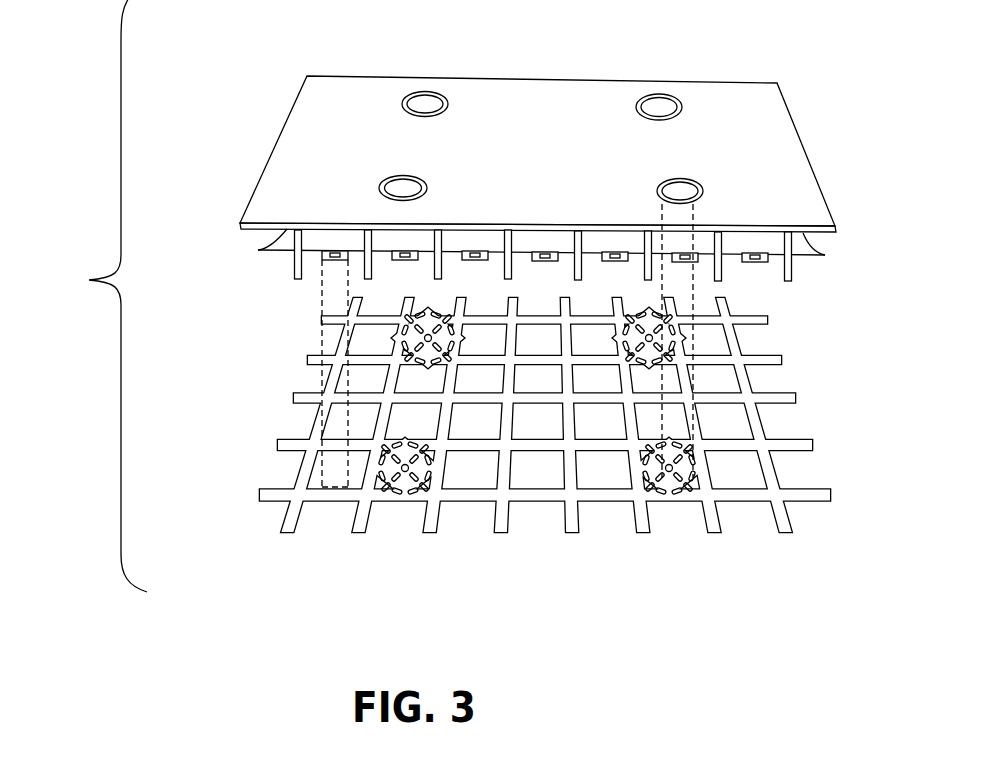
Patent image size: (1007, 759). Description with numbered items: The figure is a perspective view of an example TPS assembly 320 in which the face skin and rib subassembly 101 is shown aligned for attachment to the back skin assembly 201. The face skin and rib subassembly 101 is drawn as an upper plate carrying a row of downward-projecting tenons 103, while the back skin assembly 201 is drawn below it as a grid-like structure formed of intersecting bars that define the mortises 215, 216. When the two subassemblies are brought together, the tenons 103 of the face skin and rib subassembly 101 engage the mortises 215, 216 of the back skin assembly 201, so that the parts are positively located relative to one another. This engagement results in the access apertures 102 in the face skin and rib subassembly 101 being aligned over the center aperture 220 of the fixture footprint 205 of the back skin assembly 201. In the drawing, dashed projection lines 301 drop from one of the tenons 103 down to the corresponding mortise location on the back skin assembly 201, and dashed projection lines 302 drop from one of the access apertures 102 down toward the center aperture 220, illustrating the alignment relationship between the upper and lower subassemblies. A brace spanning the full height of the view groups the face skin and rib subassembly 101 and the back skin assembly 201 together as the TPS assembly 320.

The face skin and rib subassembly 101 is at (405, 37).
The access apertures 102 is at (683, 188).
The tenons 103 is at (334, 258).
The back skin assembly 201 is at (545, 458).
The fixture footprint 205 is at (642, 518).
The mortise 215 is at (330, 502).
The mortise 216 is at (309, 471).
The center aperture 220 is at (647, 500).
The terminal alignment projection 301 is at (320, 285).
The aperture alignment projection 302 is at (695, 286).
The TPS assembly 320 is at (86, 296).